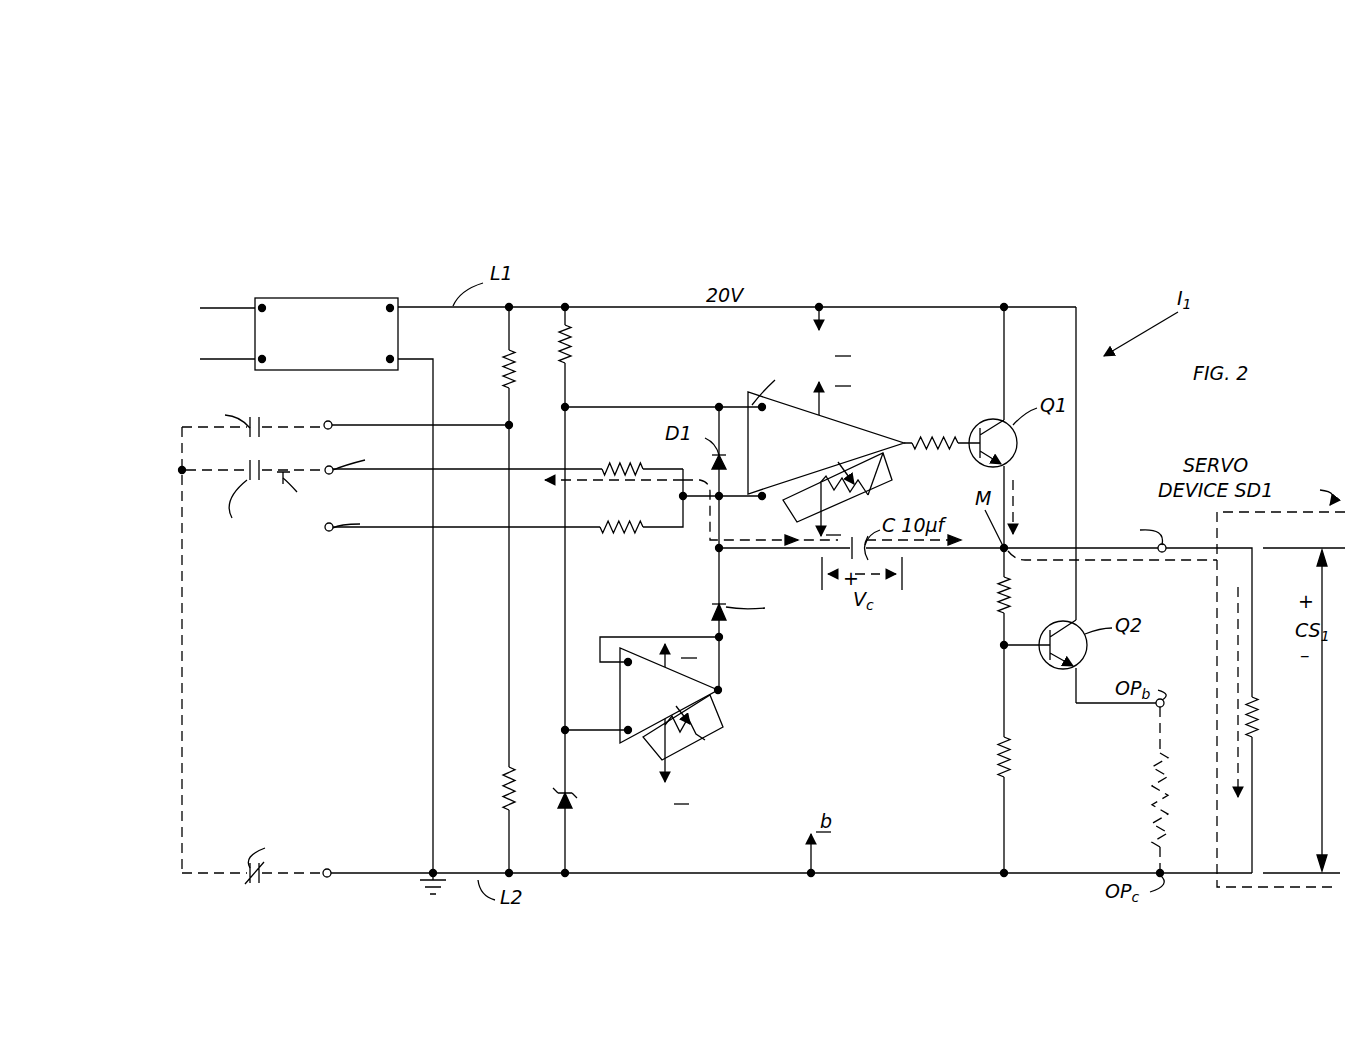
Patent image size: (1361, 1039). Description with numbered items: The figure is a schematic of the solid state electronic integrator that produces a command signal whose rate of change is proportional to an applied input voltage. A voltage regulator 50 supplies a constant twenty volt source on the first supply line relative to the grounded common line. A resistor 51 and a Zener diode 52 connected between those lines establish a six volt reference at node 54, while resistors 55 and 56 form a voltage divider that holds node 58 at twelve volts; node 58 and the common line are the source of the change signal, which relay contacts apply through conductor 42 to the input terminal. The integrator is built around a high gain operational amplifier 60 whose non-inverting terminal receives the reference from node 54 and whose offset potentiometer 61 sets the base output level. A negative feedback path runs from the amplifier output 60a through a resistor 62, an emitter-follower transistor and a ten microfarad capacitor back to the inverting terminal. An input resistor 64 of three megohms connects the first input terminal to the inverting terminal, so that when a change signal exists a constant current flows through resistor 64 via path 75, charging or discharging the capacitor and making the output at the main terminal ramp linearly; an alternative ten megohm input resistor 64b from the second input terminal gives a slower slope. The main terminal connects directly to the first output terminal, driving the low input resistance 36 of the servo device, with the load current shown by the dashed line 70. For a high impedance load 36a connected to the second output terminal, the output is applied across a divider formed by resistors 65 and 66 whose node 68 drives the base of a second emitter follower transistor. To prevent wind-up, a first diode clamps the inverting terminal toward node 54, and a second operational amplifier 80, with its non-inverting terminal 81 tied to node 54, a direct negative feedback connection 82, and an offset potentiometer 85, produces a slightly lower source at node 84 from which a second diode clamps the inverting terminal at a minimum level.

The input resistance of the servo device 36 is at (1258, 708).
The high impedance load of the servo device 36a is at (1155, 816).
The conductor 42 is at (180, 537).
The voltage regulator 50 is at (377, 298).
The resistor 51 is at (571, 340).
The Zener diode 52 is at (572, 808).
The node 54 is at (567, 407).
The resistor 55 is at (503, 800).
The resistor 56 is at (506, 380).
The node 58 is at (509, 425).
The operational amplifier 60 is at (858, 416).
The output of the amplifier 60a is at (905, 440).
The offset potentiometer 61 is at (868, 493).
The resistor 62 is at (940, 450).
The input resistor 64 is at (647, 468).
The input resistor 64b is at (631, 533).
The resistor 65 is at (998, 598).
The resistor 66 is at (998, 755).
The node 68 is at (1000, 645).
The current flow path 70 is at (1125, 560).
The path 75 is at (708, 542).
The operational amplifier 80 is at (620, 690).
The non-inverting terminal 81 is at (628, 735).
The direct negative feedback connection 82 is at (665, 637).
The node 84 is at (722, 637).
The offset potentiometer 85 is at (710, 745).